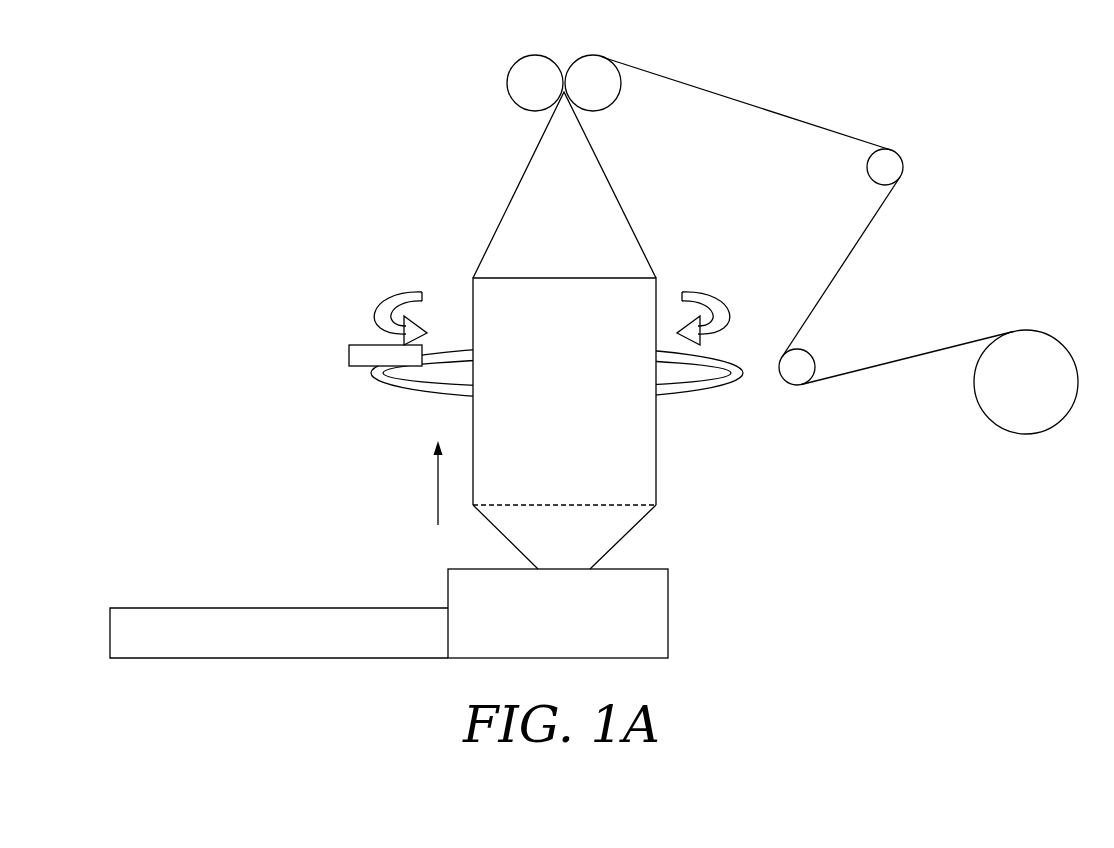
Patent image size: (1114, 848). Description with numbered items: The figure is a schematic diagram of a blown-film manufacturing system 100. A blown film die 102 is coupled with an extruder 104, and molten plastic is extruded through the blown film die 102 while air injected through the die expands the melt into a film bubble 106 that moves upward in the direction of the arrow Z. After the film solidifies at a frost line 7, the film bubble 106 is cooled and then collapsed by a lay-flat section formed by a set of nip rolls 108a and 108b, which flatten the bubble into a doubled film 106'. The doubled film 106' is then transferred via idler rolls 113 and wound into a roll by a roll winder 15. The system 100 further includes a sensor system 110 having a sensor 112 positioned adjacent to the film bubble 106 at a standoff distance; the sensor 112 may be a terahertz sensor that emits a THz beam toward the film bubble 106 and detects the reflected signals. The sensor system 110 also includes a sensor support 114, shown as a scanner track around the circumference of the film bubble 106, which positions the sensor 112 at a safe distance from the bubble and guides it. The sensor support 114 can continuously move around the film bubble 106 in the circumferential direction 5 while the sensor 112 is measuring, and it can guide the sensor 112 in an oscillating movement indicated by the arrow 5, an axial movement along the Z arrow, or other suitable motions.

The blown-film manufacturing system 100 is at (267, 134).
The blown film die 102 is at (580, 628).
The extruder 104 is at (302, 648).
The film bubble 106 is at (564, 330).
The doubled film 106' is at (807, 207).
The nip roll 108a is at (506, 81).
The nip roll 108b is at (618, 94).
The sensor system 110 is at (297, 310).
The sensor 112 is at (365, 366).
The idler rolls 113 is at (873, 180).
The sensor support 114 is at (703, 398).
The roll winder 15 is at (990, 417).
The circumferential direction 5 is at (540, 318).
The frost line 7 is at (603, 506).